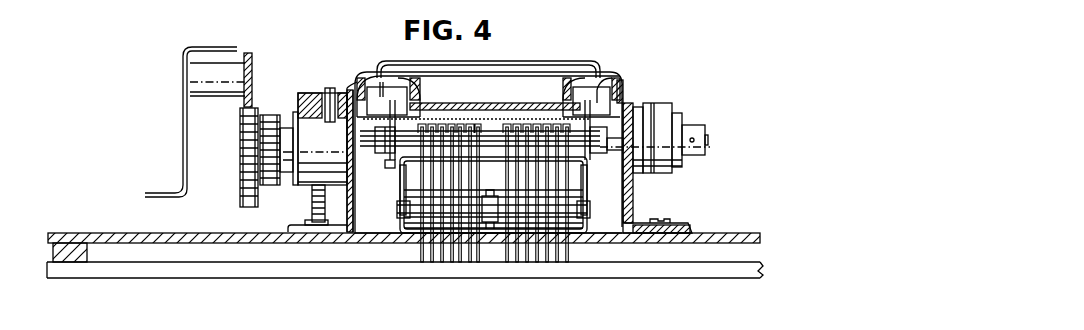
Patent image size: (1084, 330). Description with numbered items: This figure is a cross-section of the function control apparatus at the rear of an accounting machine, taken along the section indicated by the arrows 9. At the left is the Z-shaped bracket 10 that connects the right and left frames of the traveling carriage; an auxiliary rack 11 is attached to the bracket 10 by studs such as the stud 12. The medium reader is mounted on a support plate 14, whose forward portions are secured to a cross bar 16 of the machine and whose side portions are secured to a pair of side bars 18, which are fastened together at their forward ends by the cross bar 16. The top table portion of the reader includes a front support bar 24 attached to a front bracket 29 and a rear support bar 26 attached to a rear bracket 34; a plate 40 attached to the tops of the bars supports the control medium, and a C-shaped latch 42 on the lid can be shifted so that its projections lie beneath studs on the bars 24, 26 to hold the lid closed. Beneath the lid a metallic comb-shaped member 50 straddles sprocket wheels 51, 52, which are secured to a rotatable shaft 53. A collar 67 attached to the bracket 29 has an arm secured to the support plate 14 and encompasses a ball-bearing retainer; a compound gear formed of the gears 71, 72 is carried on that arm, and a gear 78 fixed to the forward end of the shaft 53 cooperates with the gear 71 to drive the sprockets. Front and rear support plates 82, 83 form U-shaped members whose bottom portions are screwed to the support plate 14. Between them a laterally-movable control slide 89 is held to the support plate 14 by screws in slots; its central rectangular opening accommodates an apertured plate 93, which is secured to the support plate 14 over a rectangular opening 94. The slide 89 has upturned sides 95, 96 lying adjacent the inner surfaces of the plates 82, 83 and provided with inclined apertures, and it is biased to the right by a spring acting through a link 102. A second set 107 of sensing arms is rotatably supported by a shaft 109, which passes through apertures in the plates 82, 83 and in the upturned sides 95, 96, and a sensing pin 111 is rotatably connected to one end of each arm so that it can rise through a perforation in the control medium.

The section line 9- 9 is at (217, 19).
The Z-shaped bracket 10 is at (182, 128).
The auxiliary rack 11 is at (252, 66).
The stud 12 is at (202, 62).
The support plate 14 is at (130, 233).
The cross bar 16 is at (50, 245).
The side bars 18 is at (108, 279).
The front support bar 24 is at (362, 105).
The rear support bar 26 is at (613, 93).
The front bracket 29 is at (350, 90).
The rear bracket 34 is at (633, 183).
The plate 40 is at (442, 117).
The C-shaped latch 42 is at (533, 60).
The comb-shaped member 50 is at (380, 97).
The sprocket wheel 51 is at (595, 160).
The sprocket wheel 52 is at (388, 165).
The rotatable shaft 53 is at (612, 122).
The collar 67 is at (306, 95).
The gear 71 is at (240, 212).
The gear 72 is at (268, 188).
The gear 78 is at (270, 115).
The front support plate 82 is at (408, 235).
The rear support plate 83 is at (587, 220).
The control slide 89 is at (412, 235).
The apertured plate 93 is at (490, 233).
The rectangular opening 94 is at (575, 242).
The upturned side 95 is at (402, 192).
The upturned side 96 is at (583, 213).
The link 102 is at (498, 253).
The second set of sensing arms 107 is at (450, 255).
The shaft 109 is at (590, 217).
The sensing pin 111 is at (422, 255).